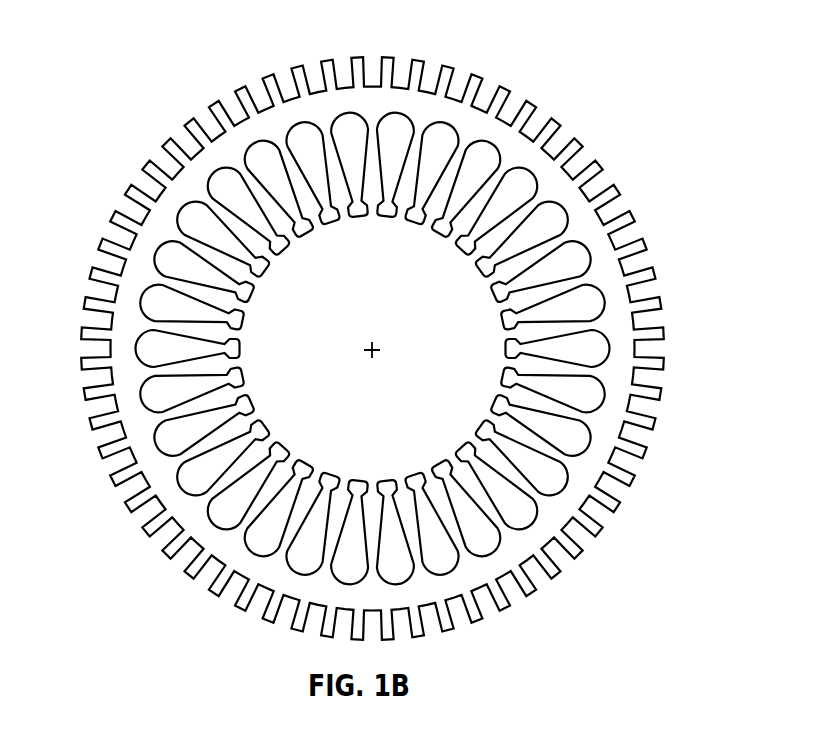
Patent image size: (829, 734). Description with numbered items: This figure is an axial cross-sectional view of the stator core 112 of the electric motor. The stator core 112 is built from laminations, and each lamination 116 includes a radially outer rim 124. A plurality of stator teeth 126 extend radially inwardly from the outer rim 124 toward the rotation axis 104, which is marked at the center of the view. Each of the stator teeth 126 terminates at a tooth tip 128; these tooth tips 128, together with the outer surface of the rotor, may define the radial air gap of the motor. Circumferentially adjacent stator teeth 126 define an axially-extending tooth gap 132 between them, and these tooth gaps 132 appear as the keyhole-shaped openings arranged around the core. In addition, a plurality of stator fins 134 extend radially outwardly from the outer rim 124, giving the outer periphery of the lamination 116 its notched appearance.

The rotation axis 104 is at (380, 344).
The stator core 112 is at (140, 70).
The lamination 116 is at (275, 120).
The radially outer rim 124 is at (500, 135).
The stator teeth 126 is at (287, 163).
The tooth tip 128 is at (258, 418).
The tooth gap 132 is at (174, 263).
The stator fins 134 is at (640, 247).